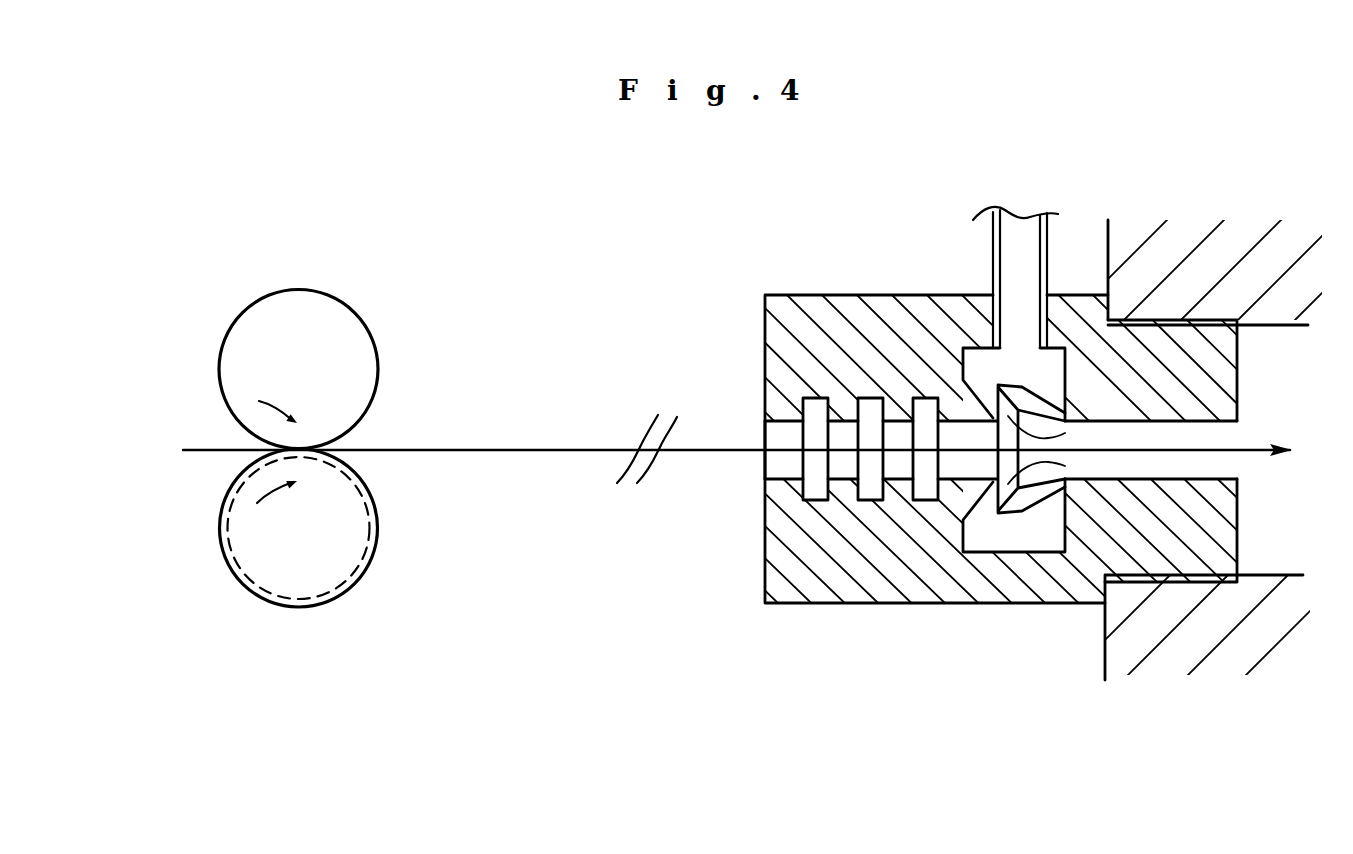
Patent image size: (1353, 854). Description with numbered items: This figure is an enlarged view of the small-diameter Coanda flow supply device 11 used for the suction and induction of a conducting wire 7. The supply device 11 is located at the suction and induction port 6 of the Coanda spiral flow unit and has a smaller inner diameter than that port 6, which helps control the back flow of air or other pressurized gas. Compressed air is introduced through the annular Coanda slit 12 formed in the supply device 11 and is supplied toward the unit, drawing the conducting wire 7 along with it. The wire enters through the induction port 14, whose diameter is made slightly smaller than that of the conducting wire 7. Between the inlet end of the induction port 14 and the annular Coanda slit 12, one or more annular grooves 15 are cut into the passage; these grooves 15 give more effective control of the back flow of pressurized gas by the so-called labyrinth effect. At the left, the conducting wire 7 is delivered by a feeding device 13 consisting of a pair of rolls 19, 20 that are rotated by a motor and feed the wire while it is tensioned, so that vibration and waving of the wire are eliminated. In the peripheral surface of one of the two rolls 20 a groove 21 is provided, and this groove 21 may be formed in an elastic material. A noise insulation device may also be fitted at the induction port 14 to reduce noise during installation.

The suction and induction port 6 is at (1257, 347).
The conducting wire 7 is at (700, 448).
The Coanda flow supply device 11 is at (1023, 612).
The Coanda slit 12 is at (1127, 514).
The feeding device 13 is at (408, 420).
The induction port 14 is at (763, 457).
The annular grooves 15 is at (923, 490).
The upper roller 19 is at (219, 370).
The lower roller 20 is at (218, 518).
The groove 21 is at (333, 590).